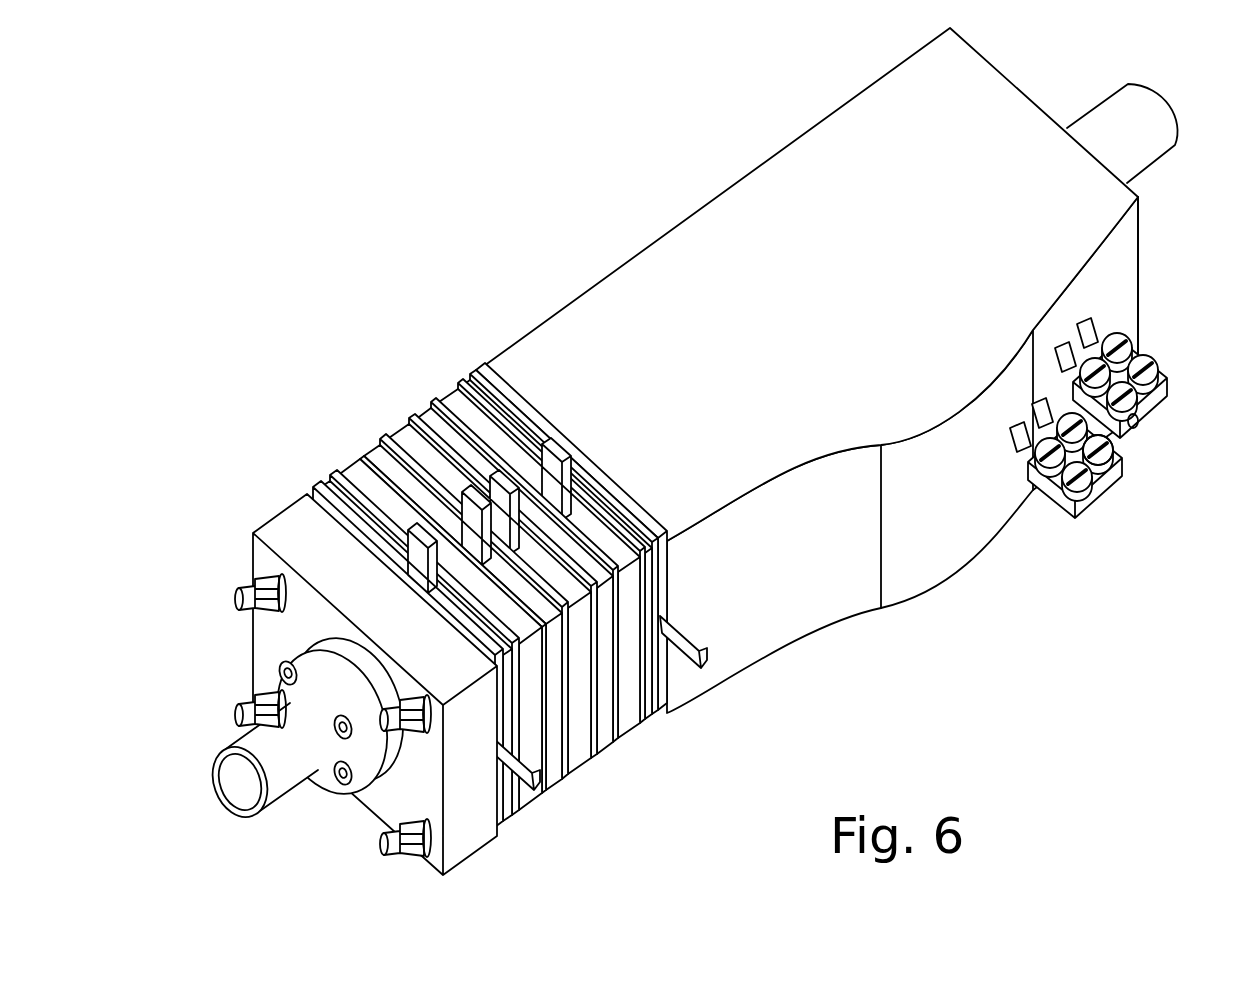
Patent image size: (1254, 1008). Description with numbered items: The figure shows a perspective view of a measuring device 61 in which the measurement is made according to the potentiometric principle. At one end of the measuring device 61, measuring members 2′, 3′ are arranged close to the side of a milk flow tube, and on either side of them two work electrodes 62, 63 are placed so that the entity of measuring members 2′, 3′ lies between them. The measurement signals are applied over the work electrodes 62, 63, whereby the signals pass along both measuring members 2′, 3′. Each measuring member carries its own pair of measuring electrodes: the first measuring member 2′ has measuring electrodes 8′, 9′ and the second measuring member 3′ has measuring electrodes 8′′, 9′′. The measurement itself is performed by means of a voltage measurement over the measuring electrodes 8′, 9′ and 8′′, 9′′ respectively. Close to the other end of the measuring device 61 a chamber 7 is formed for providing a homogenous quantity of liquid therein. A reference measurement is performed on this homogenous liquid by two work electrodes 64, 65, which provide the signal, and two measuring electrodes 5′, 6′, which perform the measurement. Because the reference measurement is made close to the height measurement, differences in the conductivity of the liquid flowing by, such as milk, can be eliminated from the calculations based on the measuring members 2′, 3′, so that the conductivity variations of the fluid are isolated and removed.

The chamber 7 is at (966, 597).
The measuring device 61 is at (542, 292).
The measuring member 2′ is at (365, 440).
The measuring member 3′ is at (423, 514).
The measuring electrode 8′ is at (418, 552).
The measuring electrode 9′ is at (468, 518).
The measuring electrode 8′′ is at (500, 488).
The measuring electrode 9′′ is at (547, 456).
The work electrode 62 is at (512, 768).
The work electrode 63 is at (708, 668).
The work electrode 64 is at (1063, 500).
The work electrode 65 is at (1138, 343).
The measuring electrode 5′ is at (1107, 472).
The measuring electrode 6′ is at (1133, 427).